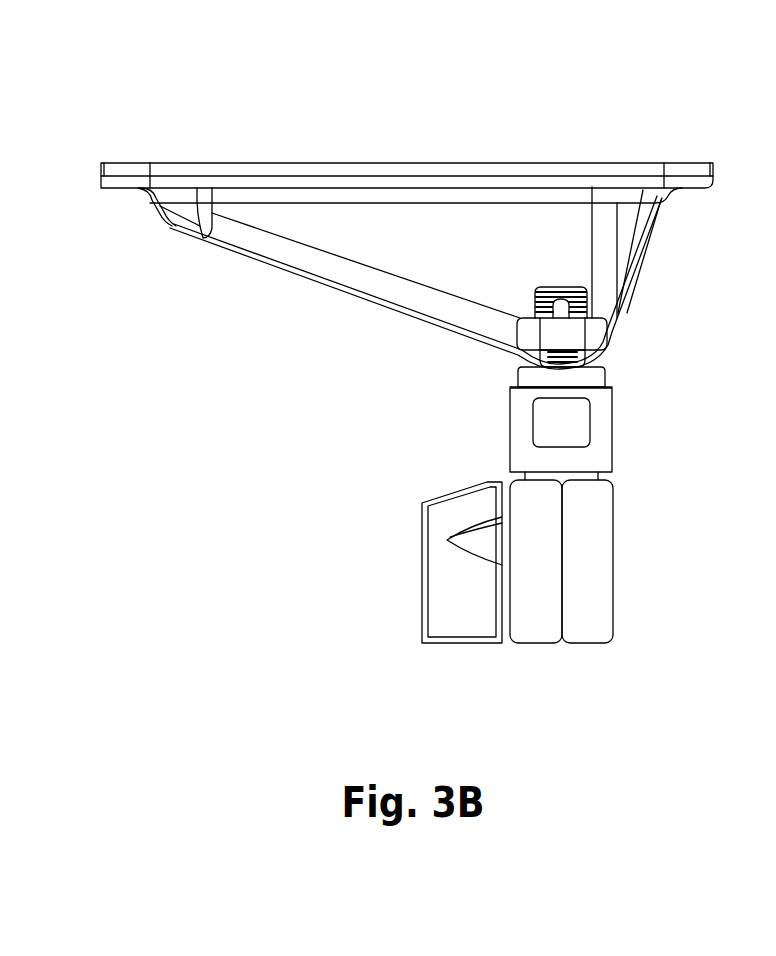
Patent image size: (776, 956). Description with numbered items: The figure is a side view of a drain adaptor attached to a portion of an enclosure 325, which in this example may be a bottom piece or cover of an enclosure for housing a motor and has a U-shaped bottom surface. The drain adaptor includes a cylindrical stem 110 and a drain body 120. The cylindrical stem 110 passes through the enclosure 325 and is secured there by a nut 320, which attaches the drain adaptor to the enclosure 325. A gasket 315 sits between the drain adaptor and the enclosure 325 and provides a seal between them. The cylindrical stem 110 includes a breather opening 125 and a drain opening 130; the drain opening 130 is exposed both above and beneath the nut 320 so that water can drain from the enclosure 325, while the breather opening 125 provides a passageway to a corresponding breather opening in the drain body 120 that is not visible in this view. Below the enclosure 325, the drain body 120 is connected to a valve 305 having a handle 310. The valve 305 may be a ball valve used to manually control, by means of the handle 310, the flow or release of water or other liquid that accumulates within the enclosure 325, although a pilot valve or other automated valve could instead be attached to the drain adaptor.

The cylindrical stem 110 is at (531, 300).
The breather opening 125 is at (554, 283).
The drain opening 130 is at (595, 313).
The nut 320 is at (612, 337).
The gasket 315 is at (608, 379).
The drain body 120 is at (536, 458).
The valve 305 is at (627, 480).
The handle 310 is at (463, 602).
The enclosure 325 is at (276, 276).